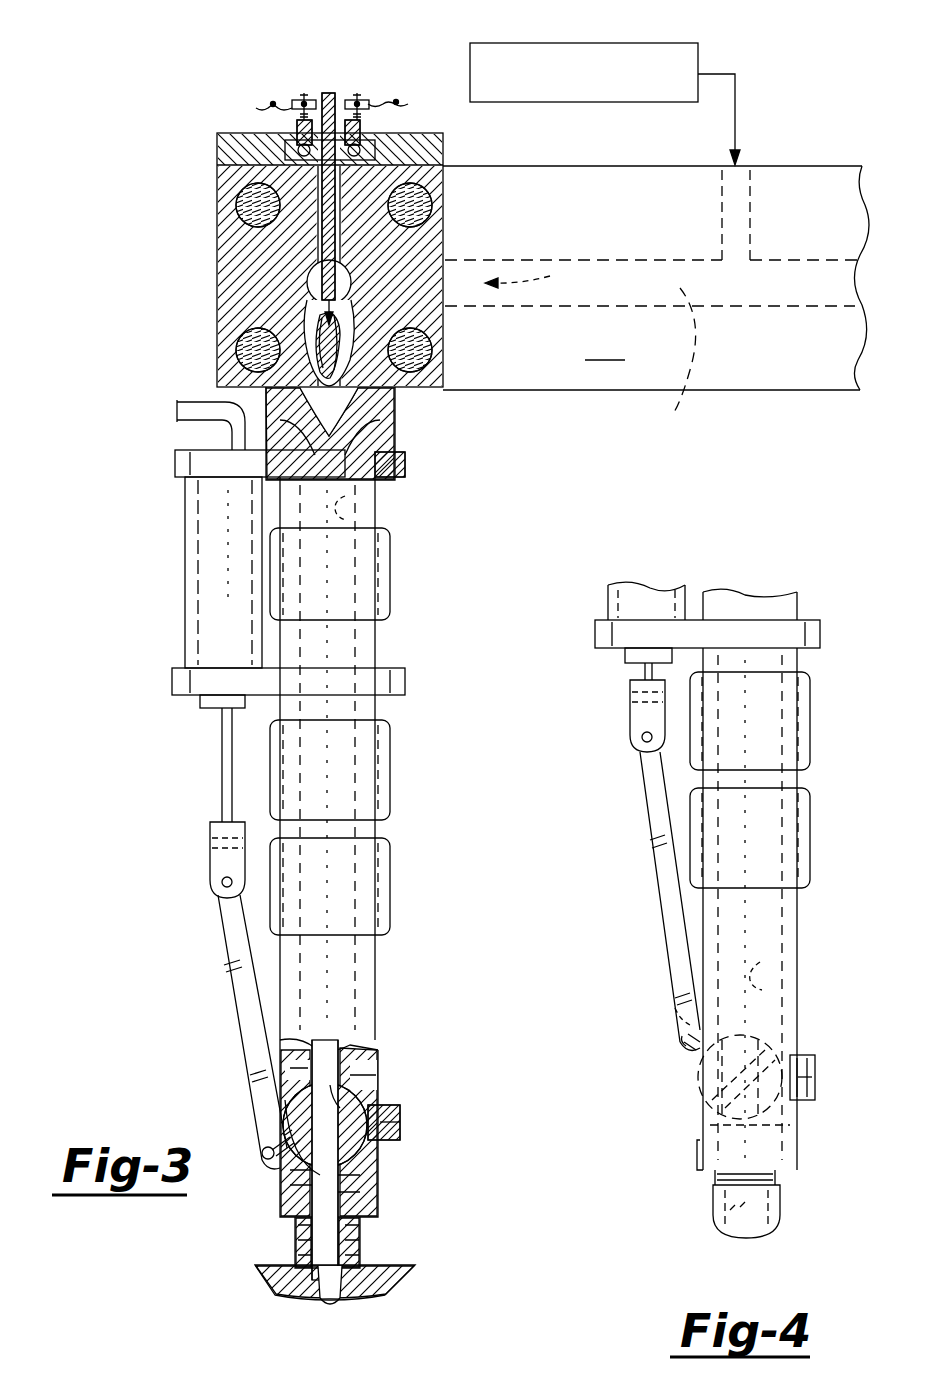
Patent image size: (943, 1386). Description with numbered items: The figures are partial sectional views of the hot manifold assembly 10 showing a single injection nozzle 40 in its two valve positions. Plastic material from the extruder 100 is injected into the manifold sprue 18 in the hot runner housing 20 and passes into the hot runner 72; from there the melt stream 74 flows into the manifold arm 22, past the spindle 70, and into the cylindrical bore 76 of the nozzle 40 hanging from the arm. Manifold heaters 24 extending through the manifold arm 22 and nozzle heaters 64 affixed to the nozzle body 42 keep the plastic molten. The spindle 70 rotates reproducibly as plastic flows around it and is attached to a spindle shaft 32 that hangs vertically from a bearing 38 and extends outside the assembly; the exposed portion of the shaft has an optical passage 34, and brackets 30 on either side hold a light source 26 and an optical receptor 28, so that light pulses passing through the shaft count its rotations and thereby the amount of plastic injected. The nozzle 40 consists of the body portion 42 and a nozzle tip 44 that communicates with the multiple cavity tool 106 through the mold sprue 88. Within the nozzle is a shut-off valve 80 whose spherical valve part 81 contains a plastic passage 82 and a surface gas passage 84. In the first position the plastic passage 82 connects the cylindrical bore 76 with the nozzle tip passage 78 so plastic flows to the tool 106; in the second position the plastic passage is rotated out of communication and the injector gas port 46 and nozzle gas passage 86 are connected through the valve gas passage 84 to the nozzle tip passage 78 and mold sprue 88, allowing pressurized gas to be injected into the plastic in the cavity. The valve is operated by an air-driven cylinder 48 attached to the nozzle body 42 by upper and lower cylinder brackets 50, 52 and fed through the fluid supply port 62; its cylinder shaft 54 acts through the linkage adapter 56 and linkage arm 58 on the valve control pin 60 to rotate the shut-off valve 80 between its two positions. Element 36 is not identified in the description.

In FIG. 3, the hot manifold assembly 10 is at (792, 84).
In FIG. 3, the manifold sprue 18 is at (745, 165).
In FIG. 3, the hot runner housing 20 is at (604, 344).
In FIG. 3, the manifold arm 22 is at (215, 272).
In FIG. 3, the manifold heaters 24 is at (240, 202).
In FIG. 3, the light source 26 is at (303, 98).
In FIG. 3, the optical receptor 28 is at (363, 98).
In FIG. 3, the brackets 30 is at (306, 98).
In FIG. 3, the spindle shaft 32 is at (345, 262).
In FIG. 3, the optical passage 34 is at (333, 95).
In FIG. 3, the spring 36 is at (258, 105).
In FIG. 3, the bearing 38 is at (300, 130).
In FIG. 3, the nozzle 40 is at (378, 987).
In FIG. 4, the nozzle 40 is at (795, 908).
In FIG. 3, the nozzle body 42 is at (380, 1046).
In FIG. 3, the nozzle tip 44 is at (365, 1250).
In FIG. 4, the nozzle tip 44 is at (766, 1232).
In FIG. 3, the injector gas port 46 is at (400, 1128).
In FIG. 4, the injector gas port 46 is at (810, 1055).
In FIG. 3, the air-driven cylinder 48 is at (242, 600).
In FIG. 4, the air-driven cylinder 48 is at (626, 582).
In FIG. 3, the upper cylinder bracket 50 is at (205, 470).
In FIG. 3, the lower cylinder bracket 52 is at (172, 680).
In FIG. 4, the lower cylinder bracket 52 is at (598, 632).
In FIG. 3, the cylinder shaft 54 is at (222, 772).
In FIG. 4, the cylinder shaft 54 is at (642, 668).
In FIG. 3, the linkage adapter 56 is at (210, 858).
In FIG. 4, the linkage adapter 56 is at (630, 730).
In FIG. 3, the linkage arm 58 is at (242, 1012).
In FIG. 4, the linkage arm 58 is at (665, 896).
In FIG. 3, the valve control pin 60 is at (262, 1150).
In FIG. 4, the valve control pin 60 is at (690, 1052).
In FIG. 3, the fluid supply port 62 is at (176, 412).
In FIG. 3, the nozzle heaters 64 is at (348, 592).
In FIG. 4, the nozzle heaters 64 is at (738, 736).
In FIG. 3, the spindle 70 is at (380, 400).
In FIG. 3, the hot runner 72 is at (708, 369).
In FIG. 3, the melt stream 74 is at (407, 463).
In FIG. 3, the cylindrical bore 76 is at (350, 512).
In FIG. 4, the cylindrical bore 76 is at (795, 975).
In FIG. 3, the nozzle tip passage 78 is at (325, 1222).
In FIG. 4, the nozzle tip passage 78 is at (718, 1218).
In FIG. 3, the shut-off valve 80 is at (288, 1112).
In FIG. 4, the shut-off valve 80 is at (698, 1097).
In FIG. 3, the spherical valve part 81 is at (370, 1090).
In FIG. 4, the spherical valve part 81 is at (672, 1016).
In FIG. 3, the plastic passage 82 is at (335, 1165).
In FIG. 4, the plastic passage 82 is at (705, 1082).
In FIG. 3, the valve gas passage 84 is at (370, 1160).
In FIG. 4, the valve gas passage 84 is at (785, 1122).
In FIG. 3, the nozzle gas passage 86 is at (402, 1124).
In FIG. 4, the nozzle gas passage 86 is at (816, 1072).
In FIG. 3, the mold sprue 88 is at (332, 1305).
In FIG. 3, the extruder 100 is at (575, 43).
In FIG. 3, the multiple cavity tool 106 is at (390, 1285).